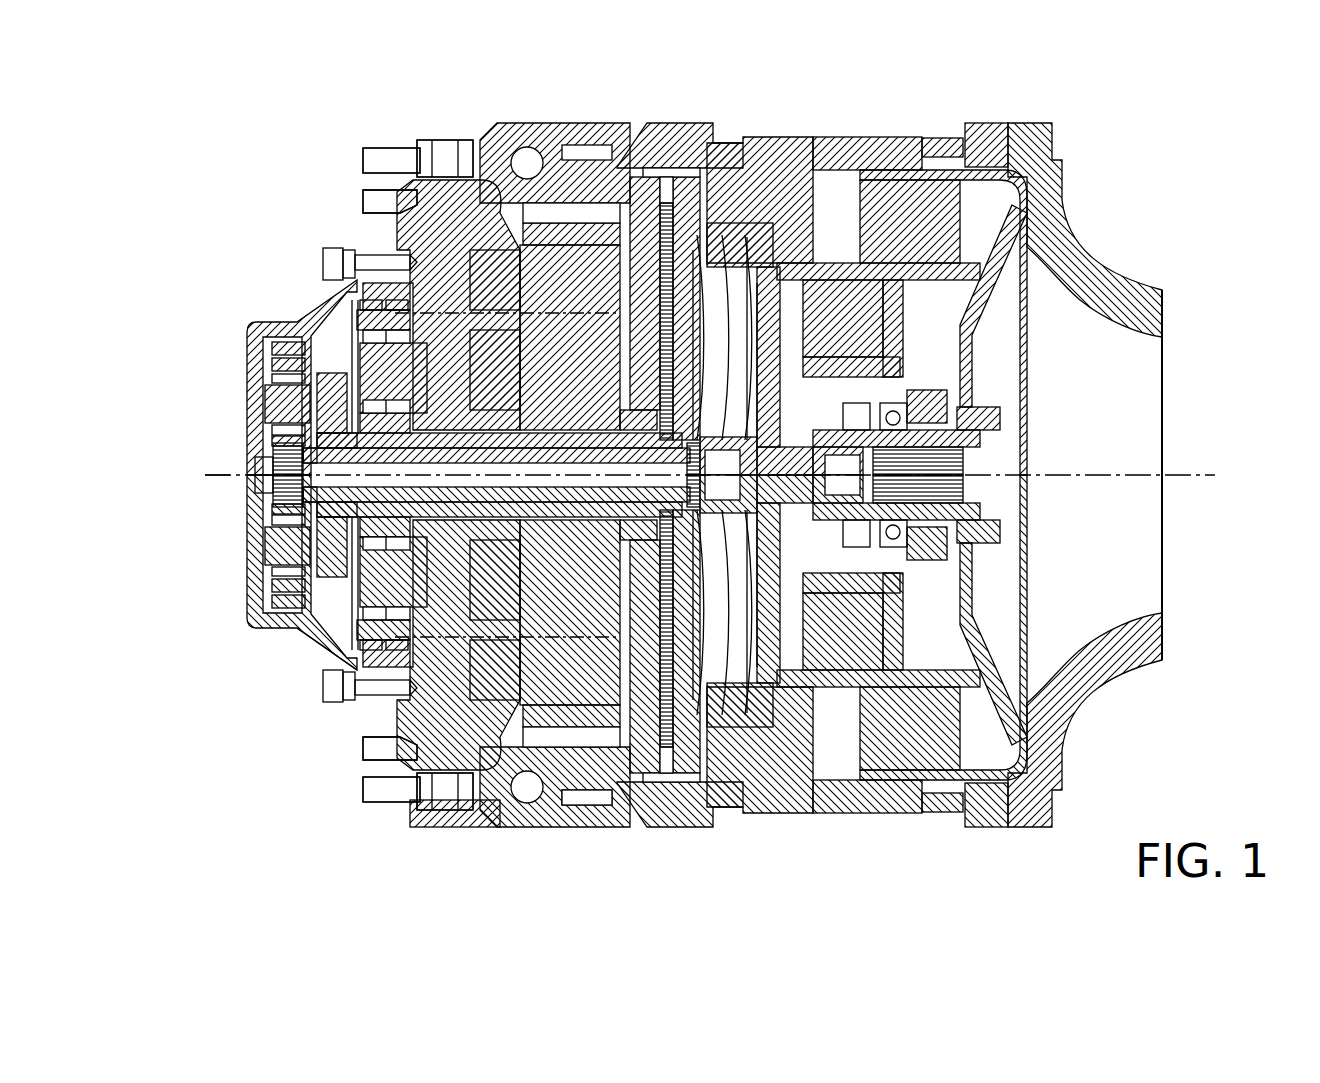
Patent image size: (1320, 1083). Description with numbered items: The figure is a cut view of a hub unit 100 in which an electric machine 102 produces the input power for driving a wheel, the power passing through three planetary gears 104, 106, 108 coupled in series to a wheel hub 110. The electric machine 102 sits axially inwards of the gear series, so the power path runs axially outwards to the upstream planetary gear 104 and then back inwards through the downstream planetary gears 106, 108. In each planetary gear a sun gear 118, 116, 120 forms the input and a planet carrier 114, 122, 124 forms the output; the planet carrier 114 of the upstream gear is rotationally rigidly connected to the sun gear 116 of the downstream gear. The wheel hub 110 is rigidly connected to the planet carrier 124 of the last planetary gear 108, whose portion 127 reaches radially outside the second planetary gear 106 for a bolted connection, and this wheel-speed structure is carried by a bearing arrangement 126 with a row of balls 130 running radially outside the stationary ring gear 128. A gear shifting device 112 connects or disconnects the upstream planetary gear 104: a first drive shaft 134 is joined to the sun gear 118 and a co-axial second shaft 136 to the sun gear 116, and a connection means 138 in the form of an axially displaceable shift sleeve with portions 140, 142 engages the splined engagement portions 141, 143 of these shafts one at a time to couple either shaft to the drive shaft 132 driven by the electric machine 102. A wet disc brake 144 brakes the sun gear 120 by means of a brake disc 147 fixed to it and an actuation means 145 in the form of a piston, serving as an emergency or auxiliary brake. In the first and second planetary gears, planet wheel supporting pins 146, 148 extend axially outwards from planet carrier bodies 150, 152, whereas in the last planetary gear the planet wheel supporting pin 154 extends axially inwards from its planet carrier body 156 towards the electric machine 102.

The hub unit 100 is at (285, 797).
The electric machine 102 is at (878, 818).
The upstream planetary gear 104 is at (230, 332).
The downstream planetary gear 106 is at (328, 233).
The last planetary gear 108 is at (573, 120).
The wheel hub 110 is at (445, 205).
The gear shifting device 112 is at (827, 612).
The planet carrier 114 is at (300, 630).
The sun gear 116 is at (350, 487).
The sun gear 118 is at (250, 467).
The sun gear 120 is at (400, 235).
The planet carrier 122 is at (335, 655).
The planet carrier 124 is at (423, 222).
The bearing arrangement 126 is at (497, 115).
The portion 127 is at (505, 365).
The ring gear 128 is at (607, 182).
The balls 130 is at (527, 160).
The drive shaft 132 is at (795, 682).
The first drive shaft 134 is at (322, 480).
The second shaft 136 is at (312, 505).
The connection means 138 is at (700, 762).
The engaging portion 140 is at (878, 258).
The engagement portion 141 is at (617, 819).
The engaging portion 142 is at (695, 250).
The engagement portion 143 is at (660, 797).
The brake 144 is at (570, 822).
The actuation means 145 is at (870, 222).
The planet wheel supporting pin 146 is at (275, 397).
The brake disc 147 is at (715, 225).
The planet wheel supporting pin 148 is at (385, 332).
The planet carrier body 150 is at (345, 355).
The planet carrier body 152 is at (340, 290).
The planet wheel supporting pin 154 is at (655, 235).
The planet carrier body 156 is at (493, 283).